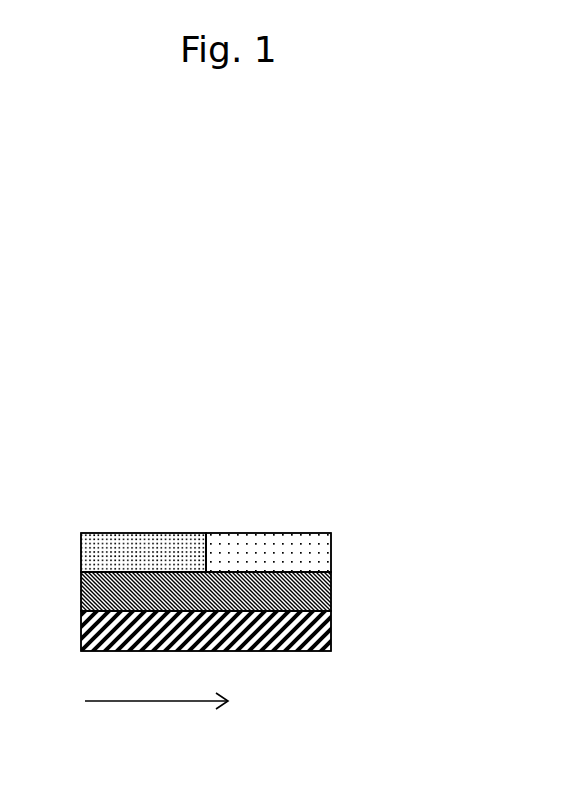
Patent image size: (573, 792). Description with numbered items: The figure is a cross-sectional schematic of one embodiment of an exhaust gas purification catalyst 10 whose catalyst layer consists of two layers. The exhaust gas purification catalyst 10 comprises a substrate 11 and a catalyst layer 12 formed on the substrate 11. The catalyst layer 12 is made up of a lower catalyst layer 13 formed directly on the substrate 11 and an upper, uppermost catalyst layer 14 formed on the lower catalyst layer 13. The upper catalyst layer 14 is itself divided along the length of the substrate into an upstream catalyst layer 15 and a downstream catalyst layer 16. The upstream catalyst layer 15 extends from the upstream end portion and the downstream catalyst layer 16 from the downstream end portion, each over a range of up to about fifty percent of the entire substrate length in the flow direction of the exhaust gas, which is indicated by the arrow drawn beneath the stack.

The exhaust gas purification catalyst 10 is at (78, 492).
The substrate 11 is at (322, 632).
The catalyst layer 12 is at (460, 495).
The lower catalyst layer 13 is at (322, 592).
The upper catalyst layer 14 is at (408, 495).
The upstream catalyst layer 15 is at (188, 541).
The downstream catalyst layer 16 is at (322, 553).